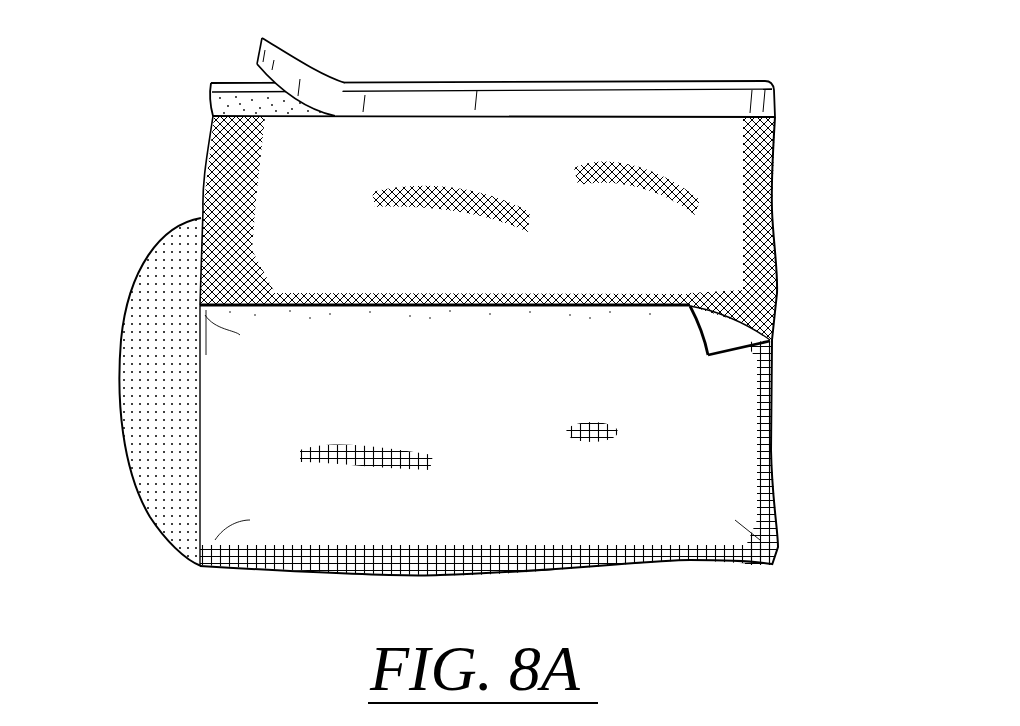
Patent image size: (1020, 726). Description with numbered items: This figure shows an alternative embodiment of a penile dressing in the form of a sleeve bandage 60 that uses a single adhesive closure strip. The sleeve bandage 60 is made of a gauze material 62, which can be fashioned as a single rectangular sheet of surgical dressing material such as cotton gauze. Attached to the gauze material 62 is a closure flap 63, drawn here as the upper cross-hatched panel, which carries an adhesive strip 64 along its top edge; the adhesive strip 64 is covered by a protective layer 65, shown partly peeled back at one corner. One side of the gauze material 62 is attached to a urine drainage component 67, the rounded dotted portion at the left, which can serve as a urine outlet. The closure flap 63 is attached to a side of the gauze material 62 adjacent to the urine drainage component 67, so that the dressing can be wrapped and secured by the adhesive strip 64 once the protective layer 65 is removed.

The sleeve bandage 60 is at (210, 587).
The gauze material 62 is at (742, 457).
The closure flap 63 is at (763, 165).
The adhesive strip 64 is at (240, 100).
The protective layer 65 is at (285, 72).
The urine drainage component 67 is at (130, 387).